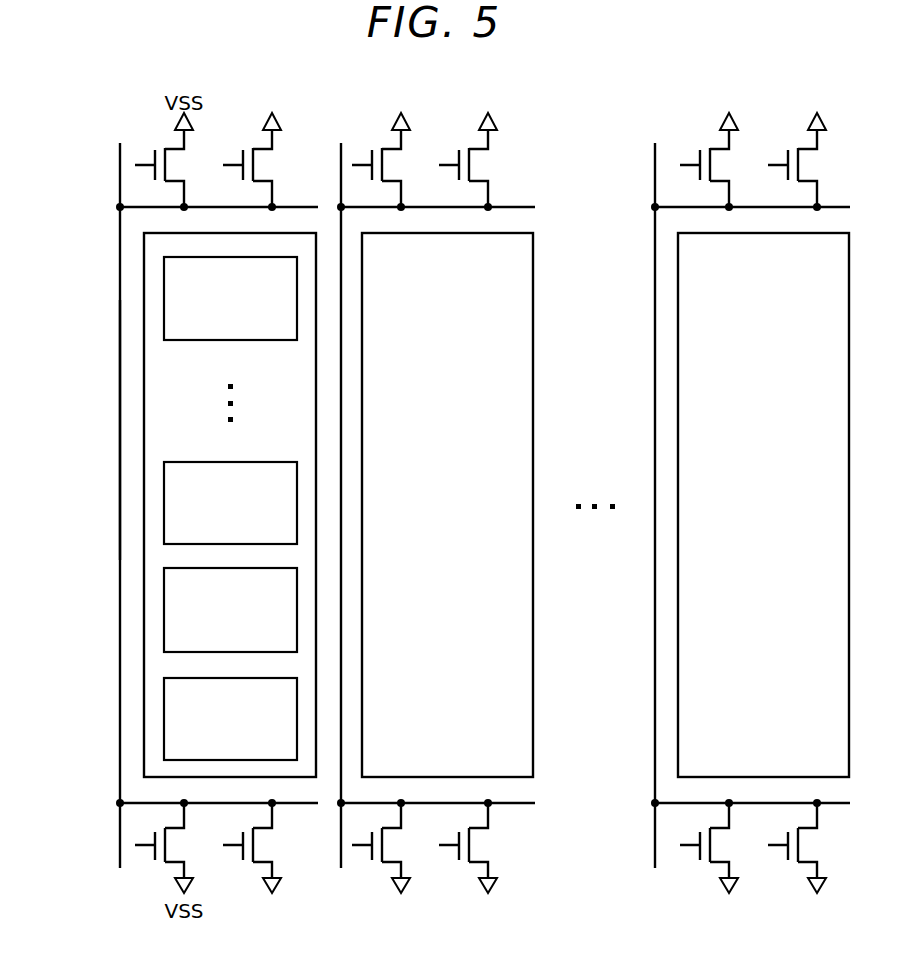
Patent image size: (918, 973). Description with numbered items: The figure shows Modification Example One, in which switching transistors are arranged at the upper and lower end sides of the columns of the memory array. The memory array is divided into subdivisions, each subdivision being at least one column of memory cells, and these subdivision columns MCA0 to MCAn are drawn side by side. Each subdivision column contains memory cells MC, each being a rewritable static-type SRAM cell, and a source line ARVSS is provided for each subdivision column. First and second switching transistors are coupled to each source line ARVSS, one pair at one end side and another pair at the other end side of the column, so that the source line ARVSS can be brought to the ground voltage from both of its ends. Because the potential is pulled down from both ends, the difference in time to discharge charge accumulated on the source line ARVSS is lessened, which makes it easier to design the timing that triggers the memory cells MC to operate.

The subdivision column of memory cells MCA0 is at (144, 368).
The subdivision column of memory cells MCAn is at (678, 366).
The memory cell MC is at (164, 722).
The source line ARVSS is at (120, 432).